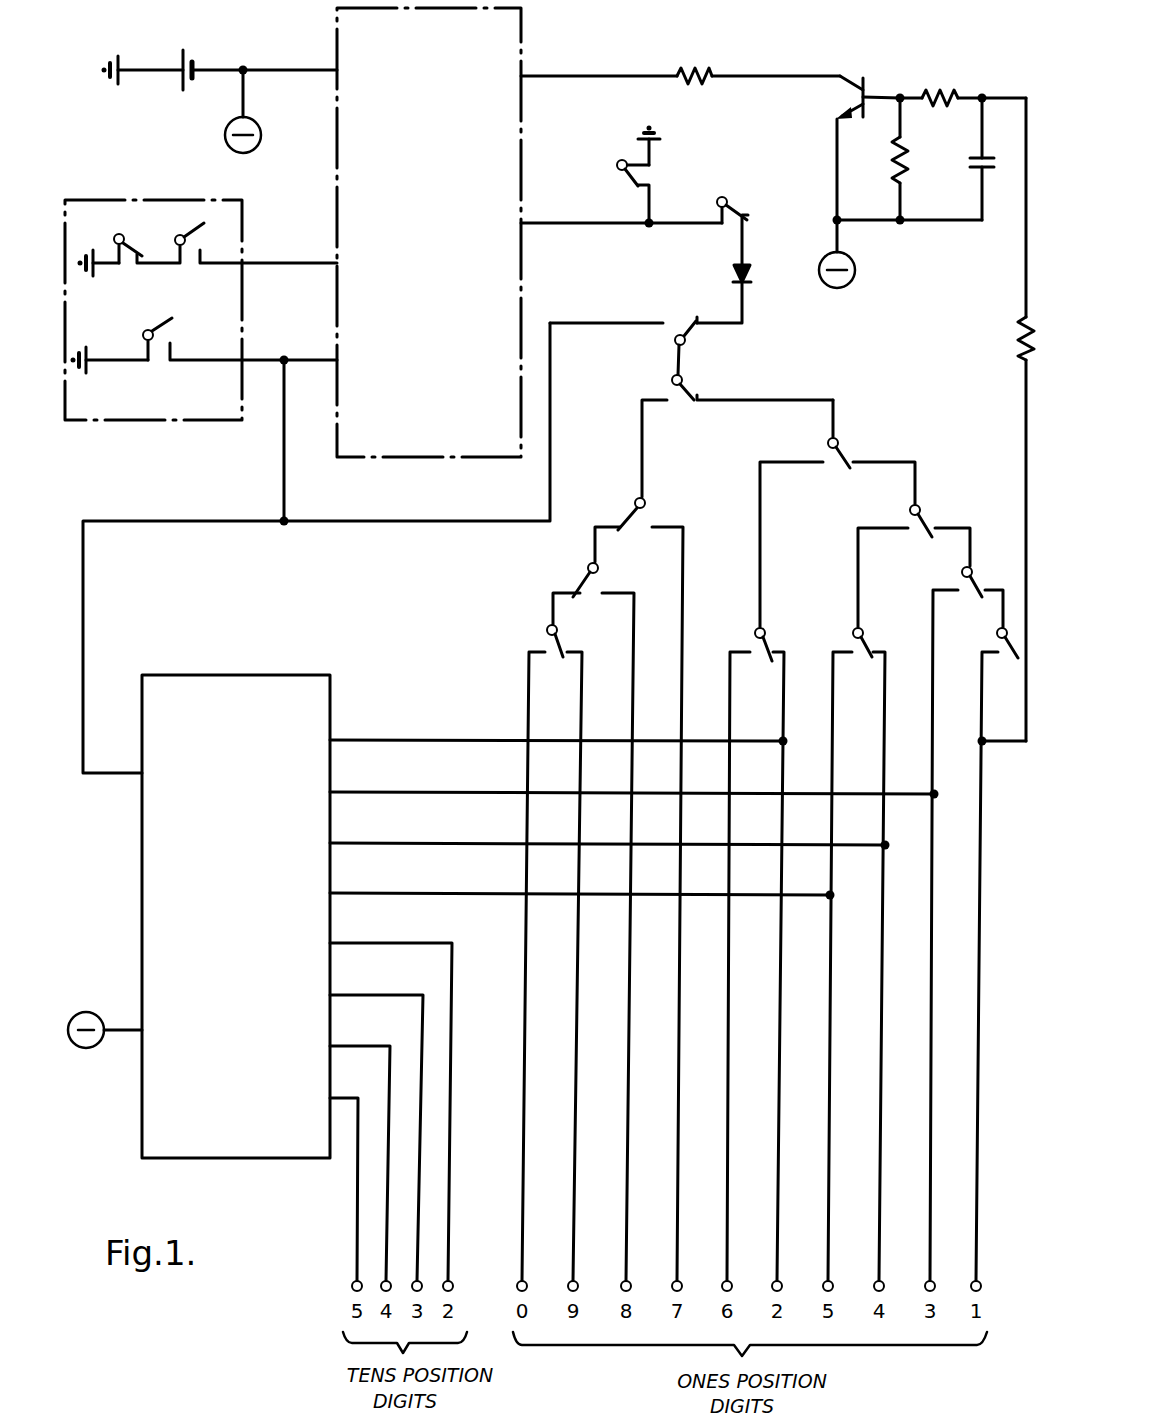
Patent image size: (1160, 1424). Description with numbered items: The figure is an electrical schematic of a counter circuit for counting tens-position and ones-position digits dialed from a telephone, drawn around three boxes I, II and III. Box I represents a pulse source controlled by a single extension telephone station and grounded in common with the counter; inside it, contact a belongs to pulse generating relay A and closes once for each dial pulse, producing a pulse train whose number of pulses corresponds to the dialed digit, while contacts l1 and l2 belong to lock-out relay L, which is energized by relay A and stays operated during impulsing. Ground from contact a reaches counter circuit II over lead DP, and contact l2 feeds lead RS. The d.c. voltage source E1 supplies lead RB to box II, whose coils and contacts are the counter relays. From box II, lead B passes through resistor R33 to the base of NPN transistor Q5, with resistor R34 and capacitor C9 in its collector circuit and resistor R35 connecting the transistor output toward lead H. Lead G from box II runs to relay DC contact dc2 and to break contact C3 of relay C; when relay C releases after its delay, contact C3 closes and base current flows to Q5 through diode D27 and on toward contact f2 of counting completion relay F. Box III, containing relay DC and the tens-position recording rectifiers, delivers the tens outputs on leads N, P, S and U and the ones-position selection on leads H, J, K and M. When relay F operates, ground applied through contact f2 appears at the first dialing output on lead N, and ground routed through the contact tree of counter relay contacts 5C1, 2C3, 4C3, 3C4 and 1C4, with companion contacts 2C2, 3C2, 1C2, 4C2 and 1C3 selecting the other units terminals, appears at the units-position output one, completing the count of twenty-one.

The pulse source box I is at (139, 178).
The counter circuit box II is at (577, 18).
The tens-position recording circuit box III is at (352, 678).
The d.c. voltage source E1 is at (173, 56).
The lead RB is at (202, 543).
The lead RS is at (316, 565).
The lead DP is at (289, 247).
The pulse generating relay contact a is at (129, 246).
The lock-out relay contact l1 is at (208, 243).
The lock-out relay contact l2 is at (157, 345).
The lead B is at (599, 90).
The lead G is at (621, 211).
The resistor R33 is at (756, 62).
The NPN transistor Q5 is at (851, 182).
The resistor R34 is at (909, 159).
The resistor R35 is at (967, 399).
The capacitor C9 is at (963, 159).
The relay DC contact dc2 is at (629, 175).
The relay C break contact C3 is at (743, 220).
The diode D27 is at (747, 294).
The counting completion relay contact f2 is at (623, 331).
The counter relay contact 5C1 is at (737, 436).
The counter relay contact 2C2 is at (639, 889).
The counter relay contact 3C2 is at (593, 922).
The counter relay contact 1C2 is at (552, 953).
The counter relay contact 4C2 is at (755, 954).
The counter relay contact 2C3 is at (837, 513).
The counter relay contact 4C3 is at (914, 566).
The counter relay contact 1C3 is at (856, 954).
The counter relay contact 3C4 is at (966, 924).
The counter relay contact 1C4 is at (998, 954).
The lead H is at (559, 729).
The lead J is at (634, 781).
The lead K is at (610, 832).
The lead M is at (582, 882).
The lead N is at (391, 1098).
The lead P is at (376, 1124).
The lead S is at (360, 1149).
The lead U is at (344, 1175).